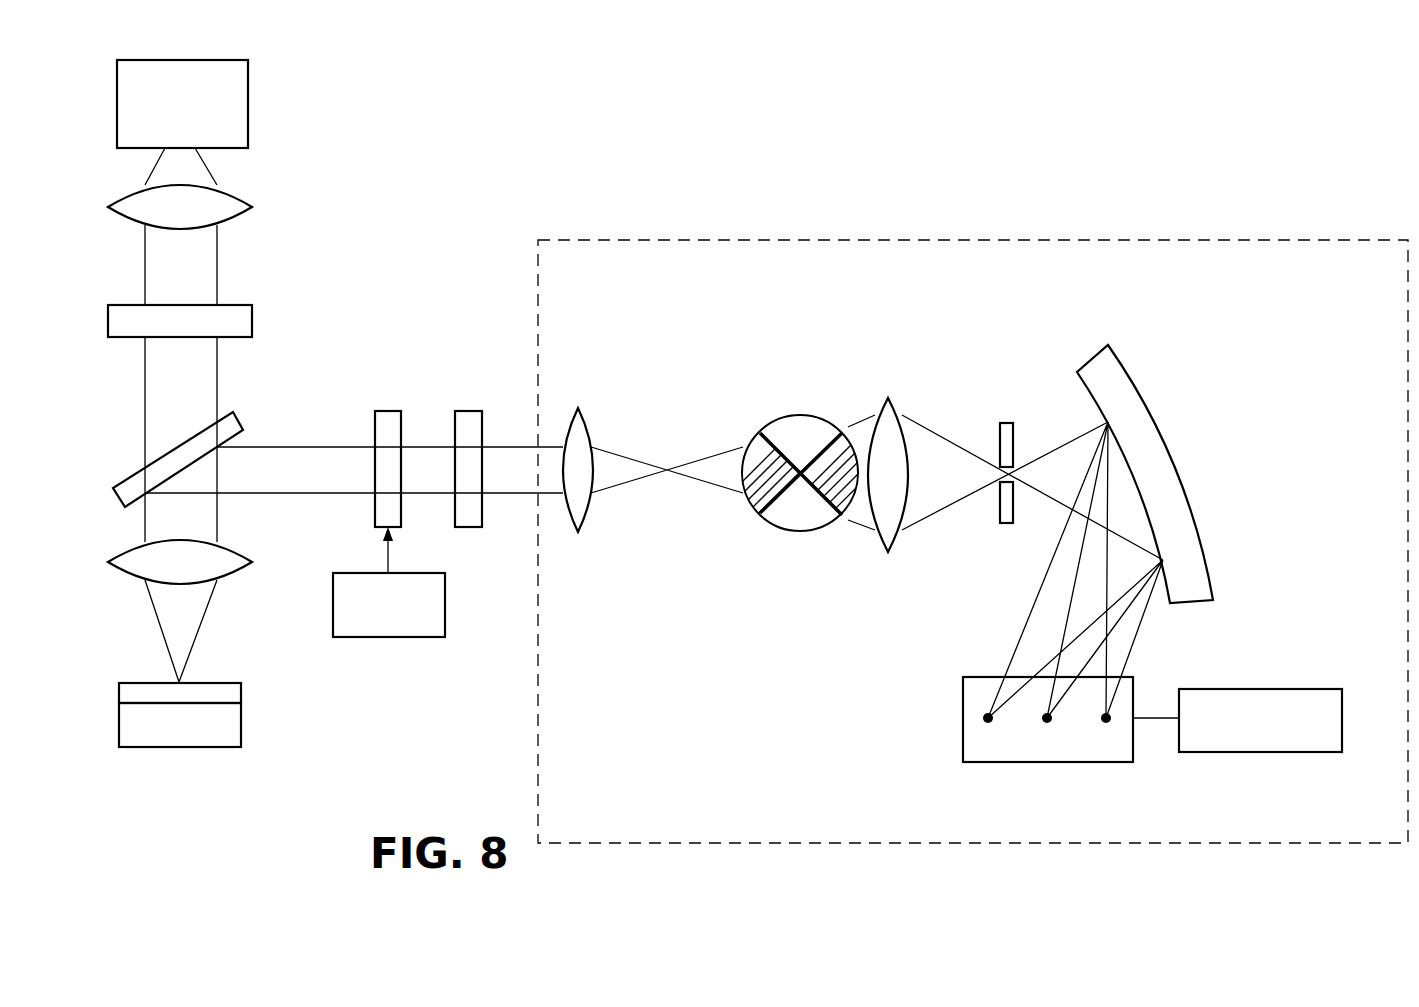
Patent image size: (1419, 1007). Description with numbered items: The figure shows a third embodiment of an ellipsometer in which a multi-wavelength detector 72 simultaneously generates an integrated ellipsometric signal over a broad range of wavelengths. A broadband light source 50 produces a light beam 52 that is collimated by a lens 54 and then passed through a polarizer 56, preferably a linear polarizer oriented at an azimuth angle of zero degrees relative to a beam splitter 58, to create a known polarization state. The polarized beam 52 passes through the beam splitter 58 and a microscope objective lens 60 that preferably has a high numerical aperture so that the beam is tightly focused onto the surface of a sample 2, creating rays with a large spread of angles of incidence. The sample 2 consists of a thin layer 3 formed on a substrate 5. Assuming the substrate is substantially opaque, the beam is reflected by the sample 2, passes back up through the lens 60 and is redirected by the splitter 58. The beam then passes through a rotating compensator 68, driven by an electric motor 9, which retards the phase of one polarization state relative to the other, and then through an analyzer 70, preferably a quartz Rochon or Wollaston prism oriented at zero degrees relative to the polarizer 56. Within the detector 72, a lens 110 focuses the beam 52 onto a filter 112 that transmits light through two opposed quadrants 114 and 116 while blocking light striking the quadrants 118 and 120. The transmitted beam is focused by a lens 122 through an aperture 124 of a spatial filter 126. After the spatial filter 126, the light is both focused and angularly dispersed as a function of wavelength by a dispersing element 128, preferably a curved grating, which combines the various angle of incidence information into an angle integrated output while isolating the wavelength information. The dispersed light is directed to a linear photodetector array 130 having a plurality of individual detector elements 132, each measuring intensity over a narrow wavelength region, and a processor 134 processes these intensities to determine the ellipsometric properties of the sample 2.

The sample 2 is at (205, 690).
The thin layer 3 is at (241, 693).
The substrate 5 is at (241, 738).
The electric motor 9 is at (445, 593).
The broadband light source 50 is at (248, 76).
The light beam 52 is at (217, 238).
The lens 54 is at (240, 197).
The polarizer 56 is at (252, 316).
The beam splitter 58 is at (243, 420).
The microscope objective lens 60 is at (240, 552).
The rotating compensator 68 is at (388, 411).
The analyzer 70 is at (470, 411).
The detector 72 is at (939, 232).
The lens 110 is at (590, 417).
The filter 112 is at (773, 417).
The quadrant 114 is at (803, 425).
The quadrant 116 is at (788, 520).
The quadrant 118 is at (757, 500).
The quadrant 120 is at (830, 515).
The lens 122 is at (890, 400).
The aperture 124 is at (1000, 478).
The spatial filter 126 is at (1007, 422).
The dispersing element 128 is at (1132, 372).
The linear photodetector array 130 is at (1072, 762).
The detector elements 132 is at (985, 720).
The processor 134 is at (1219, 752).